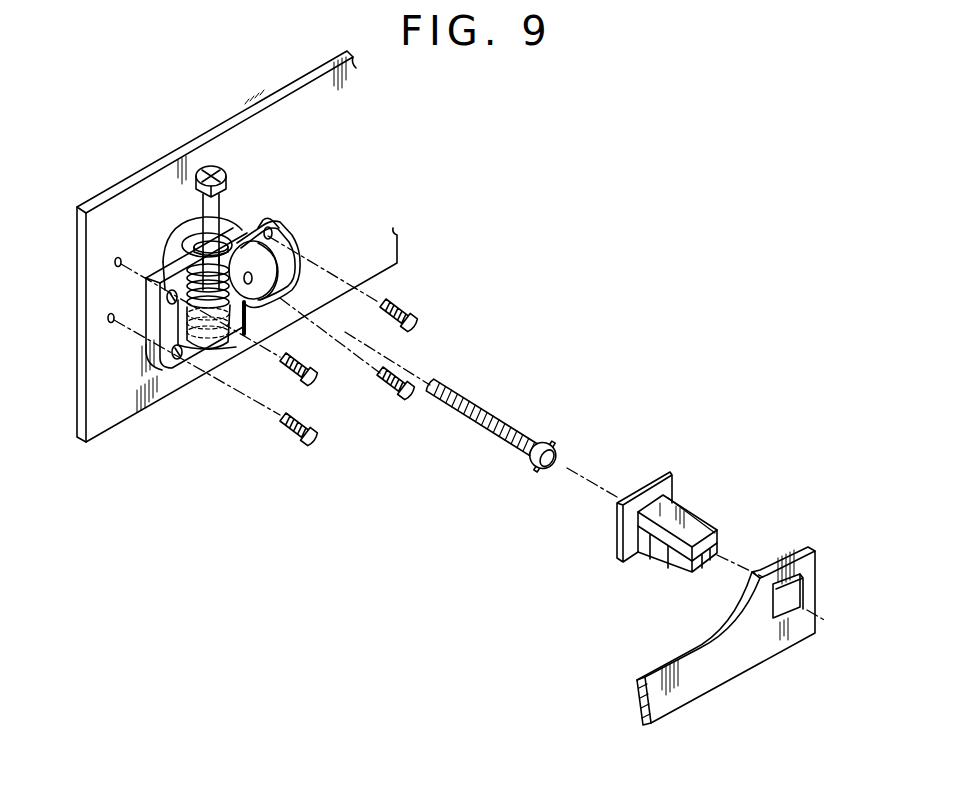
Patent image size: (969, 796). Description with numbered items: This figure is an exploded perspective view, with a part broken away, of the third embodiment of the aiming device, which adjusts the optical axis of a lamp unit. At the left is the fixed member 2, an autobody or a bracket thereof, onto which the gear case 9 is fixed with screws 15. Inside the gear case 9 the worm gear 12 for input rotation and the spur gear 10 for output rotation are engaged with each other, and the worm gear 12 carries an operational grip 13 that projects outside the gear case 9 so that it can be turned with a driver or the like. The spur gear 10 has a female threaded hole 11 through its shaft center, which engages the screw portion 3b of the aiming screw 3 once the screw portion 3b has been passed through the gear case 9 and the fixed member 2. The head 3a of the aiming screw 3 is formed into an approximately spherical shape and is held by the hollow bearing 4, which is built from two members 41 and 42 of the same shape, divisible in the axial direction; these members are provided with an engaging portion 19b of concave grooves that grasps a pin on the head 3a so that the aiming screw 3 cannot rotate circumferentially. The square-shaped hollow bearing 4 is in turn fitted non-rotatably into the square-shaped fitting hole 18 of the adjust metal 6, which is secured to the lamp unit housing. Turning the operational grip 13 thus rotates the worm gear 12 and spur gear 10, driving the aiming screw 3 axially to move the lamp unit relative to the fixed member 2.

The fixed member 2 is at (240, 120).
The aiming screw 3 is at (502, 427).
The head of the aiming screw 3a is at (547, 447).
The screw portion of the aiming screw 3b is at (469, 413).
The hollow bearing 4 is at (670, 534).
The adjust metal 6 is at (747, 636).
The gear case 9 is at (175, 234).
The spur gear 10 is at (268, 258).
The female threaded hole 11 is at (285, 278).
The worm gear 12 is at (172, 275).
The operational grip 13 is at (206, 166).
The screws 15 is at (410, 313).
The fitting hole 18 is at (806, 591).
The engaging portion 19b is at (642, 557).
The member of the hollow bearing 41 is at (663, 562).
The member of the hollow bearing 42 is at (684, 508).